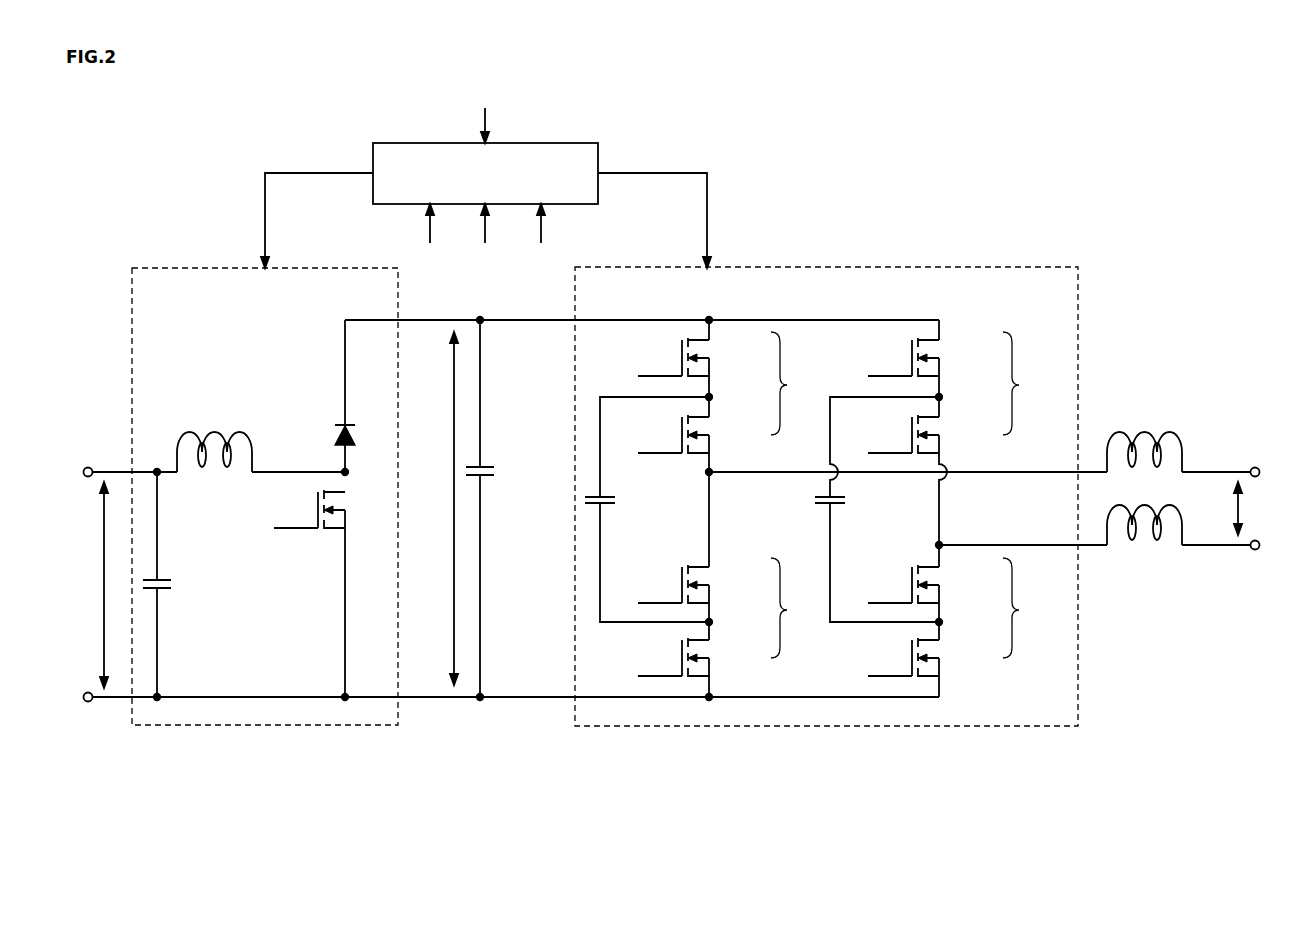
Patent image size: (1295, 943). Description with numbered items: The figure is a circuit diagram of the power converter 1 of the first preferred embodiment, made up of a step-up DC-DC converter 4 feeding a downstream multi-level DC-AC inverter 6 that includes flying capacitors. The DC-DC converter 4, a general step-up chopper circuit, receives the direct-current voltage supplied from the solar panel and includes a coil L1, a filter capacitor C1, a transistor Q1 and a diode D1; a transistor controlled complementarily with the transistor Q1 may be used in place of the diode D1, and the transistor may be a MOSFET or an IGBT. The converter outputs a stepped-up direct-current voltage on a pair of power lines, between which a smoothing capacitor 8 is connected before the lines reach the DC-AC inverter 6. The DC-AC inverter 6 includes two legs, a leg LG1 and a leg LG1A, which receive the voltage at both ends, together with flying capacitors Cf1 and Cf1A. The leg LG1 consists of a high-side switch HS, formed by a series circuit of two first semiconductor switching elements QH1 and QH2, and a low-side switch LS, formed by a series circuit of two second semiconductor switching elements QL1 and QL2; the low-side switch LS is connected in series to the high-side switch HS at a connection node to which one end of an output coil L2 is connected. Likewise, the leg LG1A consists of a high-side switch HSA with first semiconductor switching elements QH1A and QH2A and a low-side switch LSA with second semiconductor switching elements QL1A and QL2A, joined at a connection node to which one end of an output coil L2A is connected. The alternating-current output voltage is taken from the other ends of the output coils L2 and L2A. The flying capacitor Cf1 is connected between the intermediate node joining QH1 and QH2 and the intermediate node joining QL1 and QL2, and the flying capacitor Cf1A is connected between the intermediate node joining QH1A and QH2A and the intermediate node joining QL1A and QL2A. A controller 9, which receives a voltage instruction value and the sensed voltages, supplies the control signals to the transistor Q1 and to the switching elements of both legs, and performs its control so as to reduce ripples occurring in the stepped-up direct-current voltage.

The power conversion device 1 is at (1204, 168).
The DC-DC converter 4 is at (190, 268).
The DC-AC inverter 6 is at (1020, 267).
The smoothing capacitor 8 is at (486, 477).
The controller 9 is at (540, 143).
The coil L1 is at (226, 442).
The filter capacitor C1 is at (162, 590).
The diode D1 is at (346, 423).
The transistor Q1 is at (340, 512).
The first semiconductor switching element QH2 is at (713, 355).
The first semiconductor switching element QH1 is at (713, 432).
The second semiconductor switching element QL1 is at (713, 582).
The second semiconductor switching element QL2 is at (713, 655).
The first semiconductor switching element QH2A is at (943, 355).
The first semiconductor switching element QH1A is at (943, 432).
The second semiconductor switching element QL1A is at (943, 582).
The second semiconductor switching element QL2A is at (943, 655).
The flying capacitor Cf1 is at (604, 505).
The flying capacitor Cf1A is at (834, 505).
The high-side switch HS is at (792, 383).
The low-side switch LS is at (790, 608).
The high-side switch HSA is at (1031, 383).
The low-side switch LSA is at (1030, 608).
The leg LG1 is at (704, 316).
The leg LG1A is at (935, 316).
The output coil L2 is at (1158, 437).
The output coil L2A is at (1158, 510).